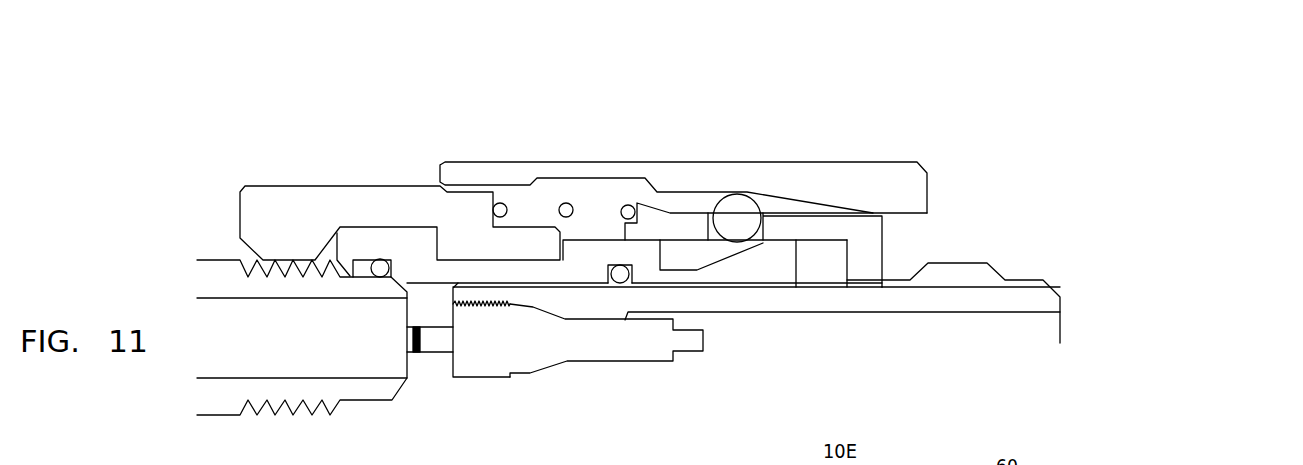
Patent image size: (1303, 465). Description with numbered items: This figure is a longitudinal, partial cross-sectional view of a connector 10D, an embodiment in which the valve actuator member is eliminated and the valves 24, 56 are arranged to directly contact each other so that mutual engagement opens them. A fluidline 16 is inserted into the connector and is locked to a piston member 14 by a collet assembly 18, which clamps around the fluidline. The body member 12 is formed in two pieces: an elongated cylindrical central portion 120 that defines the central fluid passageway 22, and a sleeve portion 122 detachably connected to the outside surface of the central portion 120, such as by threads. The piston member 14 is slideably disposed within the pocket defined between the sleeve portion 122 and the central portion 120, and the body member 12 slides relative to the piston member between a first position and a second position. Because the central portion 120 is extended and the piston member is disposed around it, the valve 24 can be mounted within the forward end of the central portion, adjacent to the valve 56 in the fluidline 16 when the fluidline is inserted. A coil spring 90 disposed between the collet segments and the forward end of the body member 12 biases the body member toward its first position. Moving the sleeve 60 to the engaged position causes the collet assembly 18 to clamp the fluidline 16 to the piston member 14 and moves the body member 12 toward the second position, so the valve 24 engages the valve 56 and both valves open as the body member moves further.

The connector 10D is at (1207, 165).
The fluidline 16 is at (203, 258).
The collet assembly 18 is at (282, 177).
The piston member 14 is at (650, 272).
The coil spring 90 is at (565, 207).
The sleeve 60 is at (838, 182).
The sleeve portion 122 is at (867, 236).
The body member 12 is at (1002, 260).
The central fluid passageway 22 is at (1052, 325).
The central portion 120 is at (970, 302).
The valve 24 is at (570, 352).
The valve 56 is at (408, 345).